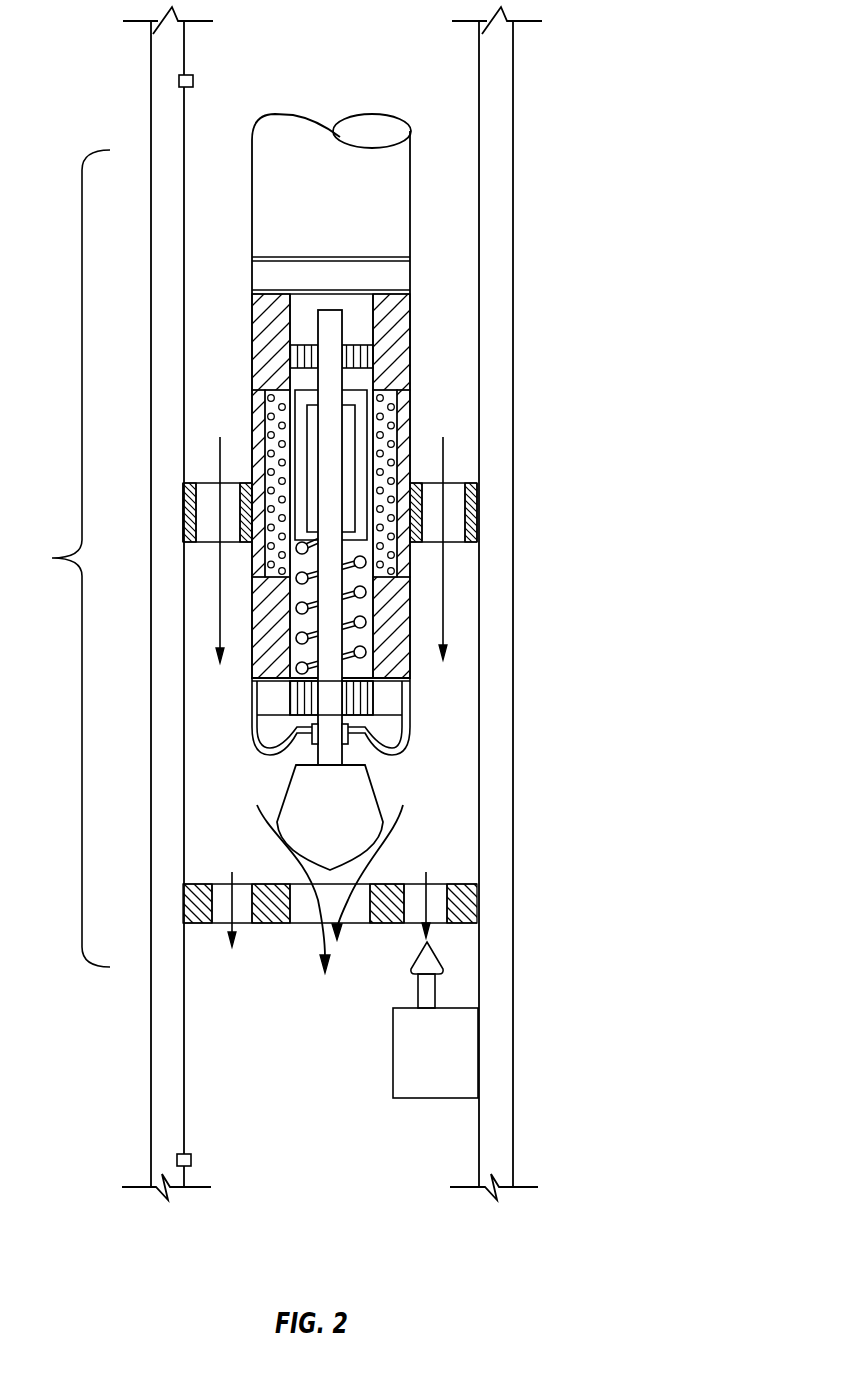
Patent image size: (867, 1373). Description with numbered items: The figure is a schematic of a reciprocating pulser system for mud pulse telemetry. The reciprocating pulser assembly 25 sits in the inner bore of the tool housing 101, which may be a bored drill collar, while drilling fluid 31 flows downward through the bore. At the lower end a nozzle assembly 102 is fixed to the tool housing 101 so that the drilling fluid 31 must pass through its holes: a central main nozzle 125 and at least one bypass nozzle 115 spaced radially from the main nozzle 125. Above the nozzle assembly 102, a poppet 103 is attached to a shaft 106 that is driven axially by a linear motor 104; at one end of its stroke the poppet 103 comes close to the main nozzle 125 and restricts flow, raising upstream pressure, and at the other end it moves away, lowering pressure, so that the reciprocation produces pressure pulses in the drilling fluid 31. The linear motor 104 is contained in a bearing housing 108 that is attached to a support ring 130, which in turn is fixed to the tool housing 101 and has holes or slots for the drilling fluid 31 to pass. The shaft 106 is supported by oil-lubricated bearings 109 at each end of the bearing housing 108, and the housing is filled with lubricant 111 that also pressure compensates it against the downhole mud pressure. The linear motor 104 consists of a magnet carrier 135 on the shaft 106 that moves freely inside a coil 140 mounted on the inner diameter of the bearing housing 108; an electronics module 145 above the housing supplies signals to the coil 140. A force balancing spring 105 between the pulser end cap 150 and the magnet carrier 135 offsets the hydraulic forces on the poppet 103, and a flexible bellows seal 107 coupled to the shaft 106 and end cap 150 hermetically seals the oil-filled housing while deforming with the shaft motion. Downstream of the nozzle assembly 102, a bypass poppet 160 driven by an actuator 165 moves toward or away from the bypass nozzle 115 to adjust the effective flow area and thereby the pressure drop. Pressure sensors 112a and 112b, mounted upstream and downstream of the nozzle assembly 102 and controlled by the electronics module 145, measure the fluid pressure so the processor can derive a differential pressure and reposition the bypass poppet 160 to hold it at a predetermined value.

The reciprocating pulser assembly 25 is at (63, 558).
The drilling fluid 31 is at (208, 277).
The tool housing 101 is at (513, 83).
The nozzle assembly 102 is at (480, 905).
The poppet 103 is at (382, 806).
The linear motor 104 is at (405, 440).
The force balancing spring 105 is at (367, 594).
The shaft 106 is at (368, 348).
The bellows seal 107 is at (407, 733).
The bearing housing 108 is at (411, 297).
The bearings 109 is at (313, 362).
The lubricant 111 is at (362, 334).
The pressure sensor 112a is at (179, 78).
The pressure sensor 112b is at (177, 1160).
The bypass nozzle 115 is at (243, 883).
The main nozzle 125 is at (355, 895).
The support ring 130 is at (455, 482).
The magnet carrier 135 is at (362, 390).
The coil 140 is at (397, 405).
The electronics module 145 is at (412, 167).
The pulser end cap 150 is at (405, 692).
The bypass poppet 160 is at (413, 958).
The actuator 165 is at (402, 1057).